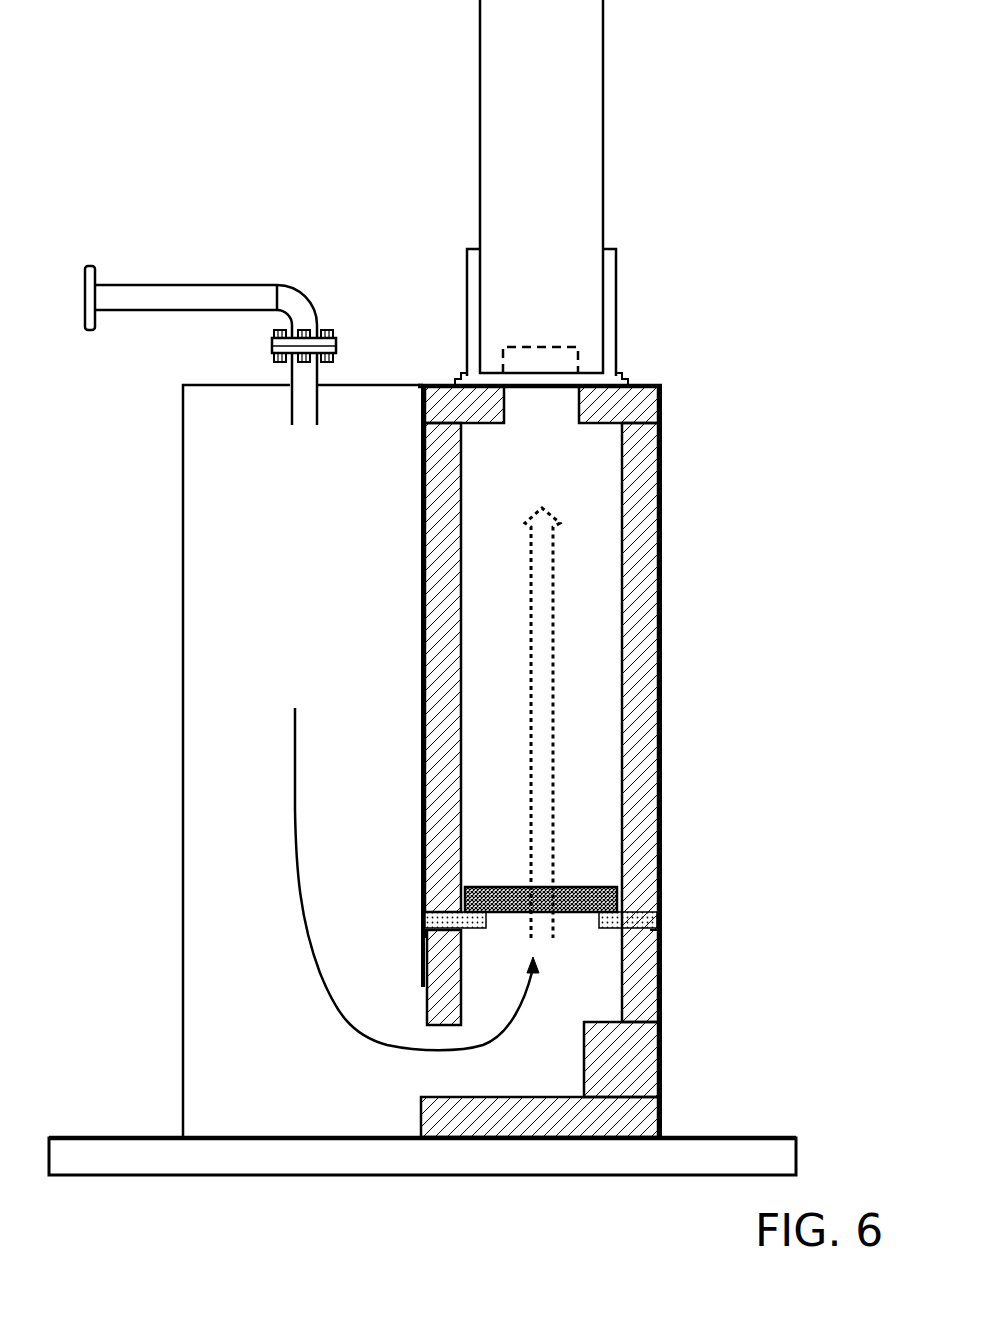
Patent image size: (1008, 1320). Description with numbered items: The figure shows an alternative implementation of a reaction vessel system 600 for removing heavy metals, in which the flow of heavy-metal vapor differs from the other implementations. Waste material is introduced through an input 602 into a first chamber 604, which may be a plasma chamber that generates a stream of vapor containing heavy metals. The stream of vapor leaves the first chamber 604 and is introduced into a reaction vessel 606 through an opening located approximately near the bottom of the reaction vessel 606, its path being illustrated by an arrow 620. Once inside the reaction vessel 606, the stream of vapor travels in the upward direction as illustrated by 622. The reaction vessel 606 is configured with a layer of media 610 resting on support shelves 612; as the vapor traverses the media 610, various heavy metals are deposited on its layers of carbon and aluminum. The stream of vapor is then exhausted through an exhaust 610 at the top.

The reaction vessel system 600 is at (183, 92).
The input 602 is at (165, 310).
The first chamber 604 is at (183, 577).
The reaction vessel 606 is at (663, 578).
The media 610 is at (480, 155).
The support shelves 612 is at (662, 922).
The arrow 620 is at (295, 823).
The upward direction 622 is at (558, 700).